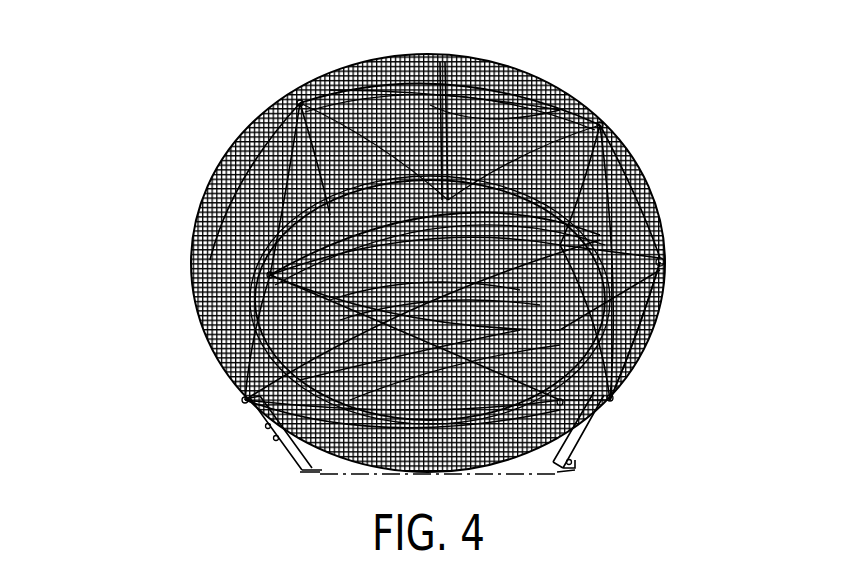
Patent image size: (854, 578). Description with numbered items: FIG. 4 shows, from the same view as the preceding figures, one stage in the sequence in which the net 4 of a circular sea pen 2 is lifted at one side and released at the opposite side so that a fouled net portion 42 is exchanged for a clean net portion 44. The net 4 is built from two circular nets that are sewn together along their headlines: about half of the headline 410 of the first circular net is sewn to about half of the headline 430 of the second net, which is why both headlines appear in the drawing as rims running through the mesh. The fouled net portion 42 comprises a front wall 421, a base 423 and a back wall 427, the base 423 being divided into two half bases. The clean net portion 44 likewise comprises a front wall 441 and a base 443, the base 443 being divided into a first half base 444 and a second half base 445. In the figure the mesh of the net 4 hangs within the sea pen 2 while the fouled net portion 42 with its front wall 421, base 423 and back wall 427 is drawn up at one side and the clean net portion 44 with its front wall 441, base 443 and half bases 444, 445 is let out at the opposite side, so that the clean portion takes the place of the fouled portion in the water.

The sea pen 2 is at (124, 201).
The net 4 is at (235, 170).
The fouled net portion 42 is at (300, 103).
The clean net portion 44 is at (250, 400).
The headline of first circular net 410 is at (645, 183).
The front wall 421 is at (545, 62).
The base 423 is at (575, 95).
The back wall 427 is at (602, 127).
The headline of second net 430 is at (662, 237).
The front wall 441 is at (660, 293).
The first half base 444 is at (652, 335).
The base 443 is at (612, 397).
The second half base 445 is at (596, 432).